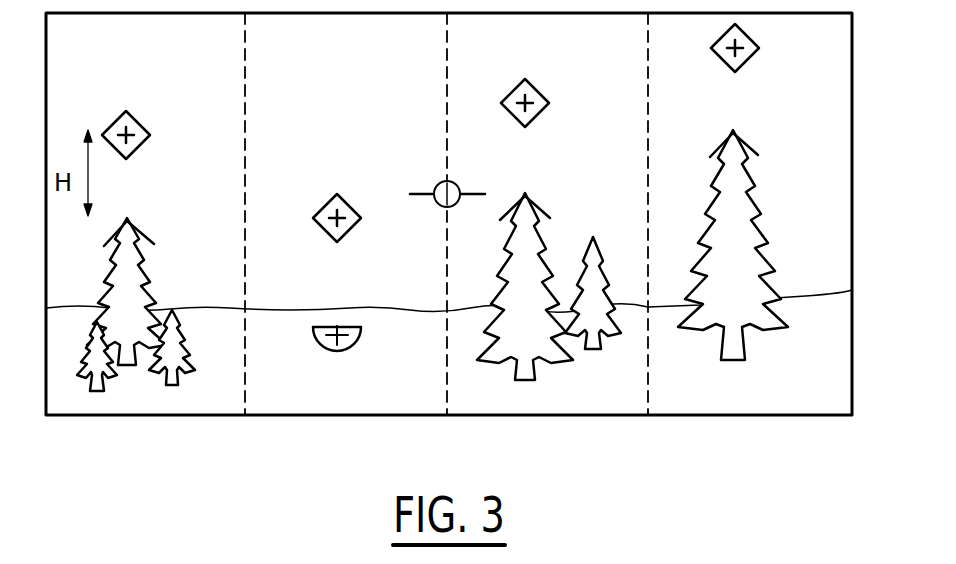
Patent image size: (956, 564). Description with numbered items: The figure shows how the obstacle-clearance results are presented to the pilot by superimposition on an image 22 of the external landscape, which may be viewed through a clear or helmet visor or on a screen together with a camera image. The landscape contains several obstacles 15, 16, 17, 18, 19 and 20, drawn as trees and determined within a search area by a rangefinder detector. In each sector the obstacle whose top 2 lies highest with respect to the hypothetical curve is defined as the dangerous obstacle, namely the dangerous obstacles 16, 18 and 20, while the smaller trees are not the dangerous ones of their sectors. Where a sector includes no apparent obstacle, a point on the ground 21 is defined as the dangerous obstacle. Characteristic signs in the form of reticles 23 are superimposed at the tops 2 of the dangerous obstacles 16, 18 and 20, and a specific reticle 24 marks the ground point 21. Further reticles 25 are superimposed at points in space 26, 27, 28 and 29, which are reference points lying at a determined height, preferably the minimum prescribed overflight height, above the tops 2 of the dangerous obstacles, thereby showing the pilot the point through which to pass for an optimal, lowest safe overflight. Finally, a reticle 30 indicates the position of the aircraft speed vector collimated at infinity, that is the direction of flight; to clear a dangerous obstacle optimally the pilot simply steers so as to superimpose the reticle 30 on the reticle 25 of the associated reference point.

The top 2 is at (127, 217).
The obstacle 15 is at (90, 355).
The dangerous obstacle 16 is at (135, 300).
The obstacle 17 is at (175, 350).
The dangerous obstacle 18 is at (517, 285).
The obstacle 19 is at (596, 280).
The dangerous obstacle 20 is at (752, 273).
The point on the ground 21 is at (337, 330).
The image of the external landscape 22 is at (795, 418).
The reticle 23 is at (150, 242).
The specific reticle 24 is at (353, 325).
The reticle 25 is at (459, 133).
The point in space 26 is at (121, 126).
The point in space 27 is at (344, 208).
The point in space 28 is at (530, 95).
The point in space 29 is at (748, 44).
The reticle 30 is at (437, 188).